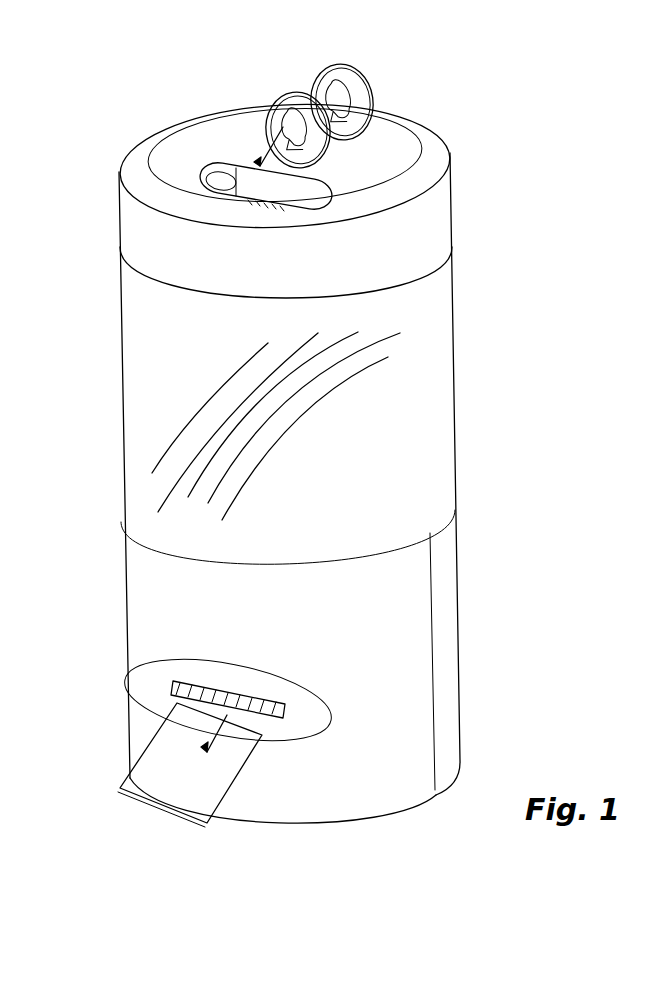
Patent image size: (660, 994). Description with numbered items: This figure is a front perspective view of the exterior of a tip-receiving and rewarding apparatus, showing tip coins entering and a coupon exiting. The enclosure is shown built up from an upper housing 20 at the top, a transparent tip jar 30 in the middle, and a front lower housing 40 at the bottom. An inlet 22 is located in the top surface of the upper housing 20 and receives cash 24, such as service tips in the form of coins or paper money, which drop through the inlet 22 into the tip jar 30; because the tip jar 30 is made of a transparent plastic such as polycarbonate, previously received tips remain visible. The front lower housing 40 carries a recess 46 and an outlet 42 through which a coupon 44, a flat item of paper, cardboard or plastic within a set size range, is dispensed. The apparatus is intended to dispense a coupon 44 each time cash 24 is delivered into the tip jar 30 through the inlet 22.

The upper housing 20 is at (452, 208).
The inlet 22 is at (222, 166).
The cash 24 is at (372, 76).
The transparent tip jar 30 is at (133, 382).
The front lower housing 40 is at (145, 590).
The outlet 42 is at (230, 690).
The coupon 44 is at (122, 792).
The recess 46 is at (228, 700).